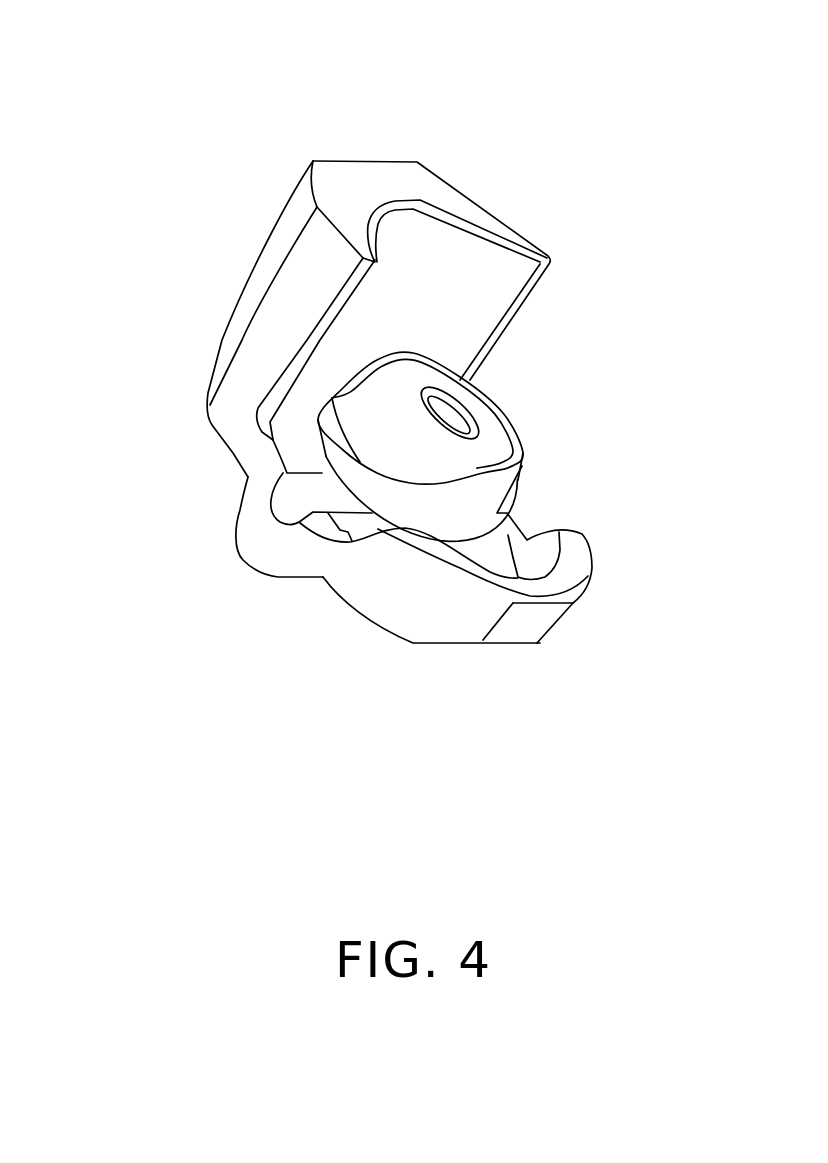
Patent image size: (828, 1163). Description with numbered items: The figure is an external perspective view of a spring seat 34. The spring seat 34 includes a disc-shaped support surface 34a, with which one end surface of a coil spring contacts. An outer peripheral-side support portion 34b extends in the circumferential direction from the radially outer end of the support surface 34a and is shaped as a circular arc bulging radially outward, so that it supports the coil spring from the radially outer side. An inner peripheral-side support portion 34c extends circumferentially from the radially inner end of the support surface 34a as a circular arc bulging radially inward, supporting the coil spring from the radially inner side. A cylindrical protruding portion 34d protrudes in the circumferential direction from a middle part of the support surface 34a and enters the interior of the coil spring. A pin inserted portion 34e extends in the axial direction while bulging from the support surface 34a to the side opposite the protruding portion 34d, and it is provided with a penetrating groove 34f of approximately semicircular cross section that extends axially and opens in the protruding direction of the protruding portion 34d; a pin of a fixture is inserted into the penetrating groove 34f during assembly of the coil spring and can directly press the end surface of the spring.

The spring seat 34 is at (231, 140).
The support surface 34a is at (298, 448).
The outer peripheral-side support portion 34b is at (263, 268).
The inner peripheral-side support portion 34c is at (518, 628).
The protruding portion 34d is at (493, 443).
The pin inserted portion 34e is at (257, 538).
The penetrating groove 34f is at (288, 503).